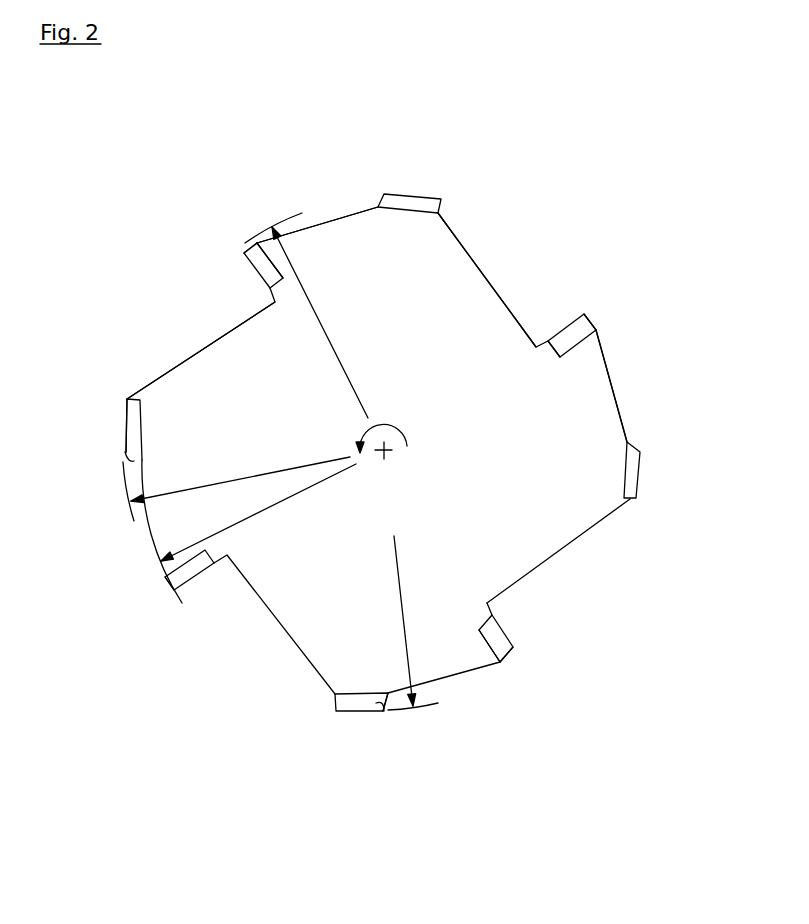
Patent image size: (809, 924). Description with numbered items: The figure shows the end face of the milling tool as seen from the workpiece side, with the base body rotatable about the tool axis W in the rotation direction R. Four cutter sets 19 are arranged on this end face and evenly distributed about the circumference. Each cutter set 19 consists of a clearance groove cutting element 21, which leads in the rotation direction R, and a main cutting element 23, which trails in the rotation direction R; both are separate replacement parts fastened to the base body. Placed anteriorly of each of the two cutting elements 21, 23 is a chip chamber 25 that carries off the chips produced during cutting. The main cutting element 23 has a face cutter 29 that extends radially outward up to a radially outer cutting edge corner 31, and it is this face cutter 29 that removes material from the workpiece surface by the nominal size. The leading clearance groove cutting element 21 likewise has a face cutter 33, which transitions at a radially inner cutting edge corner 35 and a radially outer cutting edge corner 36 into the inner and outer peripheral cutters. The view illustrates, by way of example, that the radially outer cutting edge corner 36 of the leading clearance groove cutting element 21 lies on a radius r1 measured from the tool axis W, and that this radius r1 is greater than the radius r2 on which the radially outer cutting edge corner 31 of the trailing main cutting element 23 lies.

The cutter set 19 is at (43, 384).
The clearance groove cutting element 21 is at (423, 196).
The main cutting element 23 is at (250, 243).
The chip chamber 25 is at (337, 213).
The face cutter 29 is at (257, 274).
The radially outer cutting edge corner 31 is at (248, 249).
The face cutter 33 is at (126, 442).
The radially inner cutting edge corner 35 is at (123, 477).
The radially outer cutting edge corner 36 is at (124, 465).
The rotation direction R is at (398, 425).
The tool axis W is at (383, 455).
The radius of the outer cutting edge corner of the clearance groove cutting element r1 is at (282, 576).
The radius of the outer cutting edge corner of the main cutting element r2 is at (264, 387).